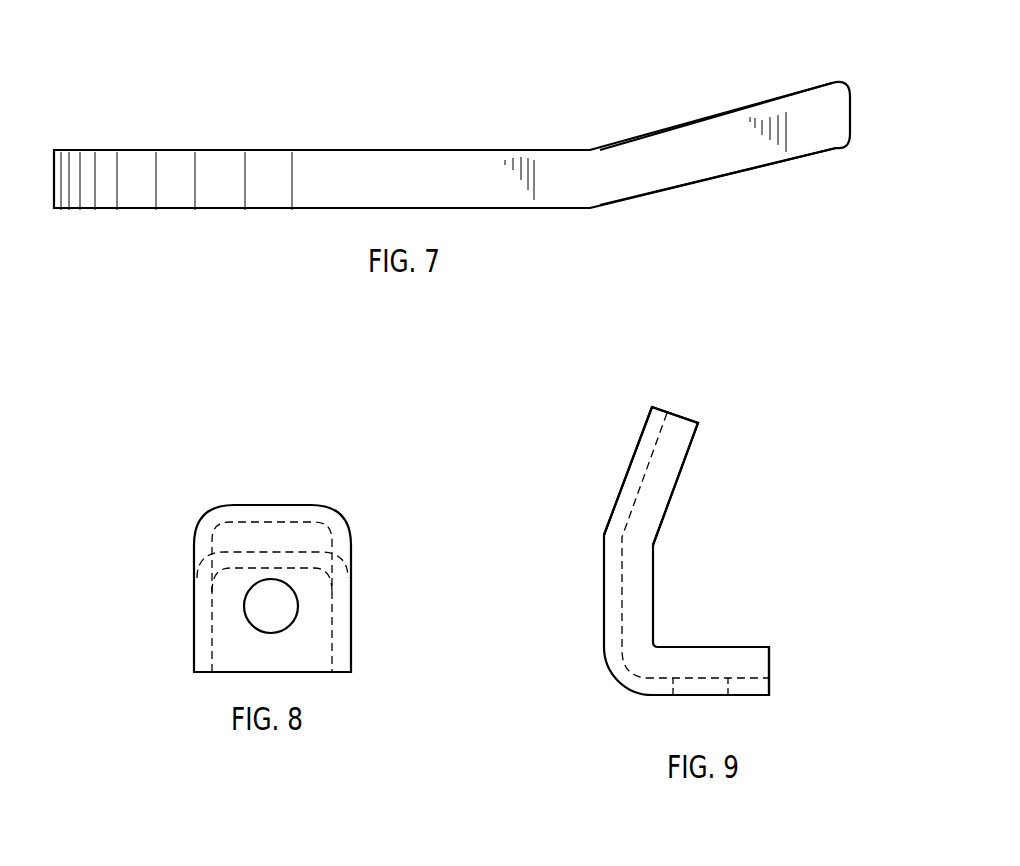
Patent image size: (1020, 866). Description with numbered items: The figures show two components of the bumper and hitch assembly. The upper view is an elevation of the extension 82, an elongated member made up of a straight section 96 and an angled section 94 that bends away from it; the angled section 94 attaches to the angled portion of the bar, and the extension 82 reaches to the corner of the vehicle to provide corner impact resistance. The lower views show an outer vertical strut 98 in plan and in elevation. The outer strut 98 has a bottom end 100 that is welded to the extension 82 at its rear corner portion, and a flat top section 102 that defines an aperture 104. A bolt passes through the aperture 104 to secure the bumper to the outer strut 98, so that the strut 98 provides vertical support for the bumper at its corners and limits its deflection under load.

In FIG. 7, the extension 82 is at (164, 142).
In FIG. 7, the angled section 94 is at (700, 130).
In FIG. 7, the straight section 96 is at (321, 163).
In FIG. 8, the outer vertical strut 98 is at (172, 498).
In FIG. 9, the outer vertical strut 98 is at (792, 504).
In FIG. 9, the bottom end 100 is at (655, 492).
In FIG. 8, the flat top section 102 is at (311, 649).
In FIG. 9, the flat top section 102 is at (757, 665).
In FIG. 8, the aperture 104 is at (258, 617).
In FIG. 9, the aperture 104 is at (684, 696).